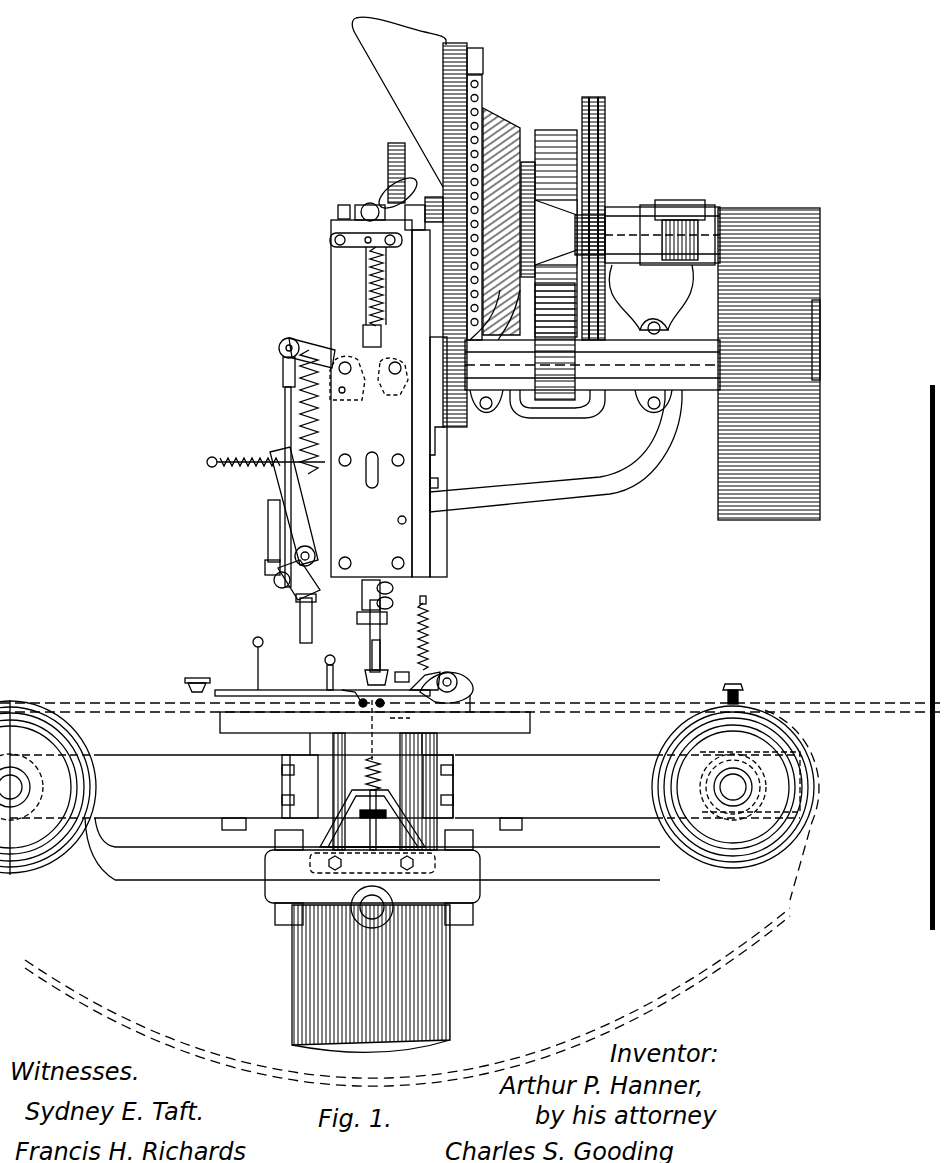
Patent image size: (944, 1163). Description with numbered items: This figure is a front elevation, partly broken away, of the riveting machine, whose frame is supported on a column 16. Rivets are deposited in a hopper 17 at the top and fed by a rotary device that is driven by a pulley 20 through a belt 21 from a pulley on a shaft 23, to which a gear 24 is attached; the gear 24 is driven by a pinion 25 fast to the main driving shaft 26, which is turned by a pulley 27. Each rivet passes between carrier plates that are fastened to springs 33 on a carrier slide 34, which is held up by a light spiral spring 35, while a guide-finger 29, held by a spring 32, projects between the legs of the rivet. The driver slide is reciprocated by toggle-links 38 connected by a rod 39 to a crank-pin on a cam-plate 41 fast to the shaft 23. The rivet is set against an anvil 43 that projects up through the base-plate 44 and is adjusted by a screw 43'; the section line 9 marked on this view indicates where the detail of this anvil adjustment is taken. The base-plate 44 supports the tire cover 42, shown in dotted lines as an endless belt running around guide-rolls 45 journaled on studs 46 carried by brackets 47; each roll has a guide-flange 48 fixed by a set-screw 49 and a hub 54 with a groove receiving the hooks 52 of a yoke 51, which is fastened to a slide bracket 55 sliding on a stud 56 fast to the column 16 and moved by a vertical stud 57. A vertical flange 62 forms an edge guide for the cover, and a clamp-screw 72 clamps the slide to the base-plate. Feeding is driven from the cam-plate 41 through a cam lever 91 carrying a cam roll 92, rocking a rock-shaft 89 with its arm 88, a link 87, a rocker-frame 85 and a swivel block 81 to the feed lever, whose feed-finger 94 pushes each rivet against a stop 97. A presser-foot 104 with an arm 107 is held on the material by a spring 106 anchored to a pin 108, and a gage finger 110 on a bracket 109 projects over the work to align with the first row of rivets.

The hopper 17 is at (387, 60).
The cam-plate 41 is at (388, 150).
The rod 39 is at (365, 210).
The toggle-links 38 is at (355, 250).
The light spiral spring 35 is at (368, 263).
The arm 88 is at (310, 348).
The rock-shaft 89 is at (349, 388).
The cam roll 92 is at (393, 389).
The cam lever 91 is at (389, 398).
The link 87 is at (268, 536).
The rocker-frame 85 is at (285, 592).
The swivel block 81 is at (300, 628).
The bracket 109 is at (240, 688).
The gage finger 110 is at (185, 681).
The clamp-screw 72 is at (285, 690).
The springs 33 is at (327, 676).
The carrier slide 34 is at (371, 588).
The pin 108 is at (426, 612).
The spring 106 is at (426, 625).
The spring 32 is at (380, 660).
The guide-finger 29 is at (409, 675).
The arm 107 is at (432, 690).
The presser-foot 104 is at (474, 690).
The vertical flange 62 is at (470, 703).
The stop 97 is at (430, 692).
The feed-finger 94 is at (352, 694).
The center line 9 is at (371, 788).
The anvil 43 is at (410, 719).
The base-plate 44 is at (530, 728).
The screw 43' is at (418, 808).
The vertical stud 57 is at (362, 832).
The brackets 47 is at (170, 765).
The hubs 54 is at (55, 775).
The guide-flange 48 is at (72, 800).
The studs 46 is at (60, 830).
The guide-rolls 45 is at (45, 840).
The hooks 52 is at (40, 740).
The set-screw 49 is at (735, 692).
The tire cover 42 is at (648, 712).
The yoke 51 is at (540, 880).
The slide bracket 55 is at (352, 912).
The stud 56 is at (366, 910).
The column 16 is at (445, 1000).
The gear 24 is at (540, 130).
The pulley 20 is at (605, 134).
The belt 21 is at (605, 189).
The shaft 23 is at (716, 212).
The main driving shaft 26 is at (815, 343).
The pinion 25 is at (556, 400).
The pulley 27 is at (760, 521).